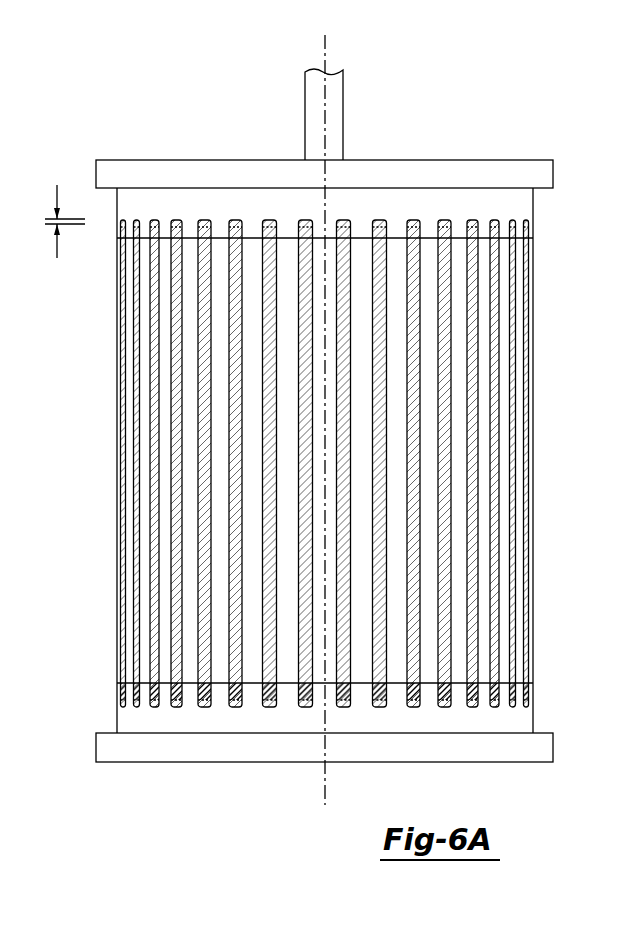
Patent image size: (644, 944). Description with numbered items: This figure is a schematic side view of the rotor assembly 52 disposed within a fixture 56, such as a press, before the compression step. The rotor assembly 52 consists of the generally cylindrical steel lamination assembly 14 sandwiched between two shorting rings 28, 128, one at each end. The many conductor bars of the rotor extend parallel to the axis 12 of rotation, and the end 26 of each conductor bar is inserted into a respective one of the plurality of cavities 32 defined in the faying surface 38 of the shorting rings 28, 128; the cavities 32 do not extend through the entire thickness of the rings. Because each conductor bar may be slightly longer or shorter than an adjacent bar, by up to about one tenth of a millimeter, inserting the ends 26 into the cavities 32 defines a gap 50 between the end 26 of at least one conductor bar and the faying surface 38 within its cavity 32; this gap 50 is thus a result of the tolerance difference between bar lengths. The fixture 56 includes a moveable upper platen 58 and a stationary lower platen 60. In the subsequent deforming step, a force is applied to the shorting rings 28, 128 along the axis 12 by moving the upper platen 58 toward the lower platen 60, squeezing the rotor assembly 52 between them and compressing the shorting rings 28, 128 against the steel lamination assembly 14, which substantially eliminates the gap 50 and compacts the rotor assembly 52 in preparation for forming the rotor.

The axis of rotation 12 is at (326, 58).
The fixture 56 is at (344, 103).
The upper platen 58 is at (507, 172).
The lower platen 60 is at (163, 762).
The steel lamination assembly 14 is at (533, 455).
The shorting ring 28 is at (533, 207).
The shorting ring 128 is at (533, 722).
The rotor assembly 52 is at (281, 449).
The end of conductor bar 26 is at (235, 218).
The faying surface 38 is at (352, 222).
The cavities 32 is at (415, 225).
The gap 50 is at (54, 221).